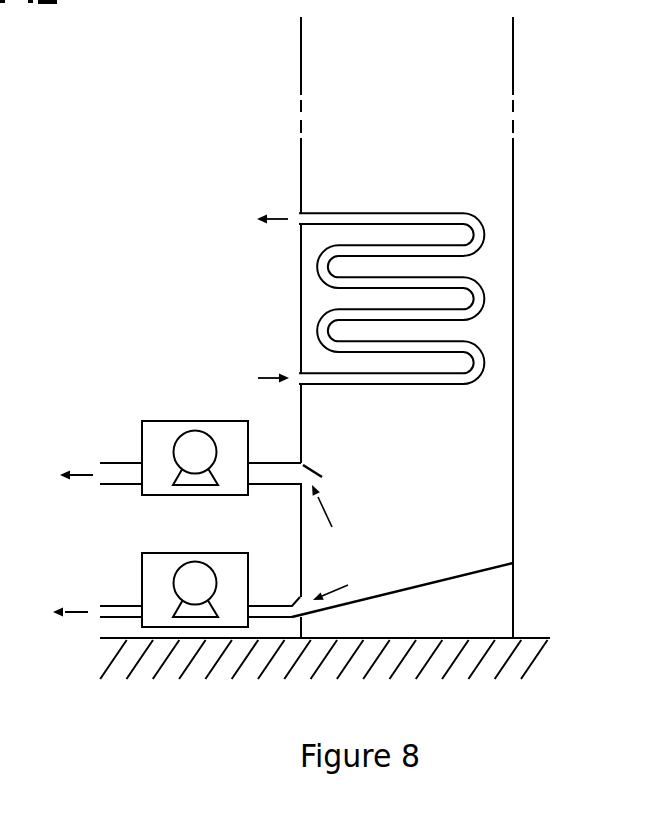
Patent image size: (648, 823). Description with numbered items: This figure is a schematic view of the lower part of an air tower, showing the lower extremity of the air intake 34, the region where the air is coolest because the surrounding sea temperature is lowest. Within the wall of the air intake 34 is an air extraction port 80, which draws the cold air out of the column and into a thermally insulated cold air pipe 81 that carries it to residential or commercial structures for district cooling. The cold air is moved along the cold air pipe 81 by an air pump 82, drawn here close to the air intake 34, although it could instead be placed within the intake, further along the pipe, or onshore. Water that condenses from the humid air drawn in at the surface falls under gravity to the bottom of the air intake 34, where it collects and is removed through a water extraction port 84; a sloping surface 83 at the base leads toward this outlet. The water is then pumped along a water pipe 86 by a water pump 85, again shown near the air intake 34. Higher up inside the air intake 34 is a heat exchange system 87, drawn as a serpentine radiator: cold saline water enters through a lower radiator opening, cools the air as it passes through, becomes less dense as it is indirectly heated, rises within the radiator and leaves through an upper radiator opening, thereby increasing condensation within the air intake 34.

The air intake 34 is at (513, 265).
The heat exchange system 87 is at (393, 212).
The air extraction port 80 is at (305, 466).
The cold air pipe 81 is at (118, 462).
The air pump 82 is at (180, 421).
The sloped drain / collector plate 83 is at (468, 577).
The water extraction port 84 is at (302, 603).
The water pump 85 is at (180, 553).
The water pipe 86 is at (115, 606).